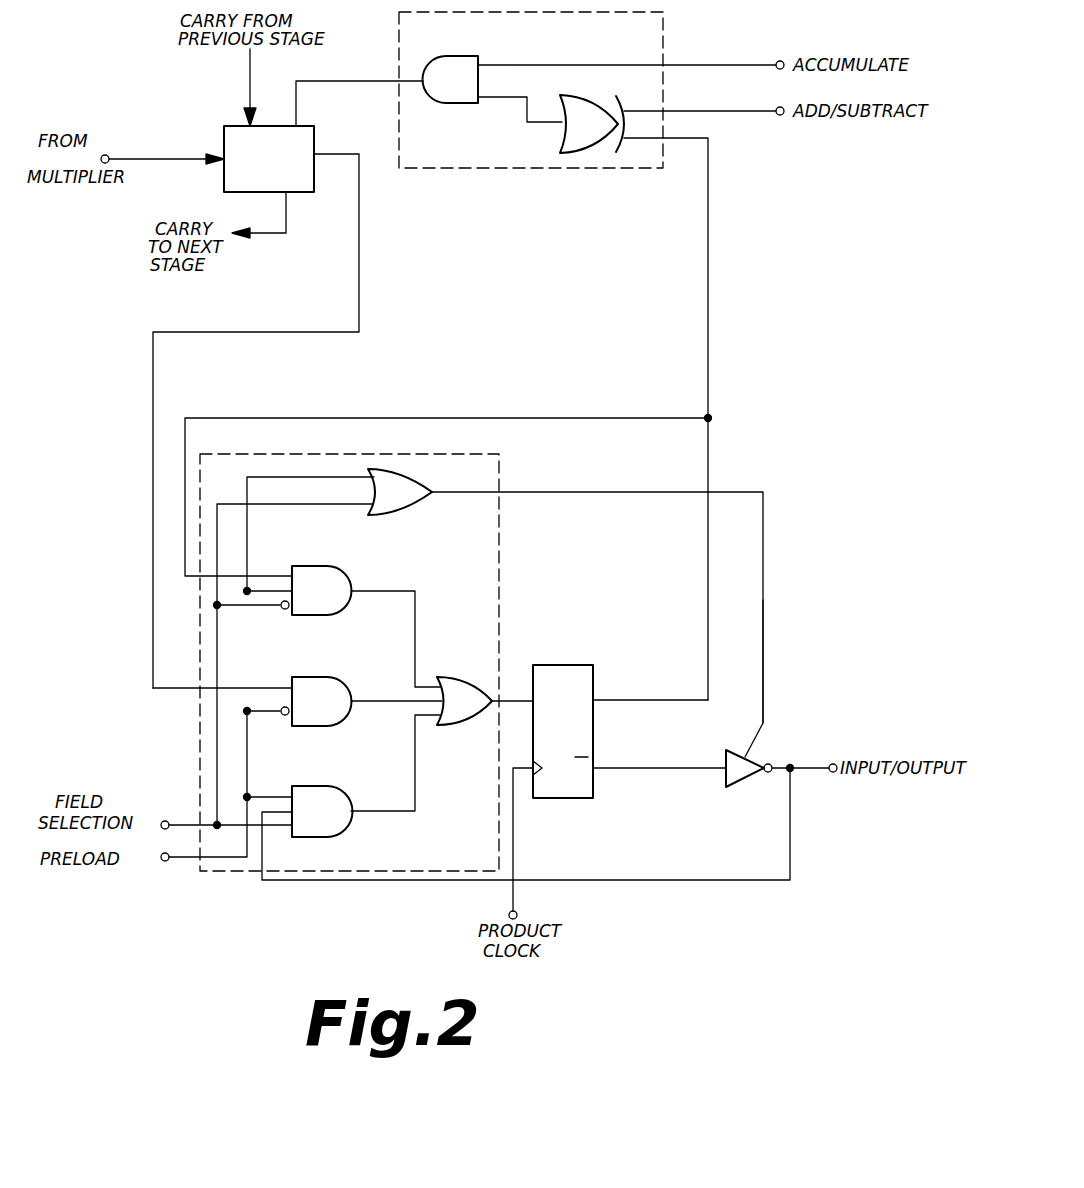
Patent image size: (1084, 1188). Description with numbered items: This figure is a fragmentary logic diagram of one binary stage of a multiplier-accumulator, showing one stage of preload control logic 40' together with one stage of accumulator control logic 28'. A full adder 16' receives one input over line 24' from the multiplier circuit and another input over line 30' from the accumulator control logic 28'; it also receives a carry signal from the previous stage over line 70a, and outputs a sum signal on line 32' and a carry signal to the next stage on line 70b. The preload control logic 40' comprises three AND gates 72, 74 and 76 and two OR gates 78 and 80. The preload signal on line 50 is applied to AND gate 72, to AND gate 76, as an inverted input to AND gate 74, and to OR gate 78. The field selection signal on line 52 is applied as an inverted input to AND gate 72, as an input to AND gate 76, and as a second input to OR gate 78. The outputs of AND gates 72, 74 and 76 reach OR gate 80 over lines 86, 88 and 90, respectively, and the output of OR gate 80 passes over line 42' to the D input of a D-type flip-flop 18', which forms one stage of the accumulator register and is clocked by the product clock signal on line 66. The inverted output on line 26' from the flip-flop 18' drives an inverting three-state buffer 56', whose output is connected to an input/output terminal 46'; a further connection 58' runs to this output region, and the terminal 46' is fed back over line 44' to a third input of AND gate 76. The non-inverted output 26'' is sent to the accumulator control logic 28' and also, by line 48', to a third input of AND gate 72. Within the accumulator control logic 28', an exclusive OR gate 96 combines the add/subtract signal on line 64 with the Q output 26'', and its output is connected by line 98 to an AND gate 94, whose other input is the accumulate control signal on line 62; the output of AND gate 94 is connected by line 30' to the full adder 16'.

The full adder 16' is at (286, 179).
The line 24' is at (162, 147).
The line 70a is at (248, 60).
The line 70b is at (258, 238).
The line 30' is at (359, 103).
The line 32' is at (287, 421).
The accumulator control logic 28' is at (531, 106).
The AND gate 94 is at (450, 56).
The exclusive OR gate 96 is at (586, 92).
The line 98 is at (494, 104).
The line 62 is at (700, 65).
The line 64 is at (730, 113).
The line 48' is at (448, 419).
The preload control logic stage 40' is at (349, 687).
The OR gate 78 is at (412, 514).
The AND gate 72 is at (320, 616).
The AND gate 74 is at (326, 677).
The AND gate 76 is at (326, 786).
The line 86 is at (418, 614).
The line 88 is at (366, 704).
The line 90 is at (417, 786).
The OR gate 80 is at (452, 726).
The line 42' is at (523, 664).
The D-type flip-flop 18' is at (563, 751).
The non-inverted output 26'' is at (650, 681).
The line 26' is at (659, 751).
The connecting line 58' is at (795, 661).
The inverting three-state buffer 56' is at (750, 786).
The input/output terminal 46' is at (812, 788).
The line 44' is at (526, 843).
The line 66 is at (514, 892).
The line 52 is at (176, 822).
The line 50 is at (172, 862).